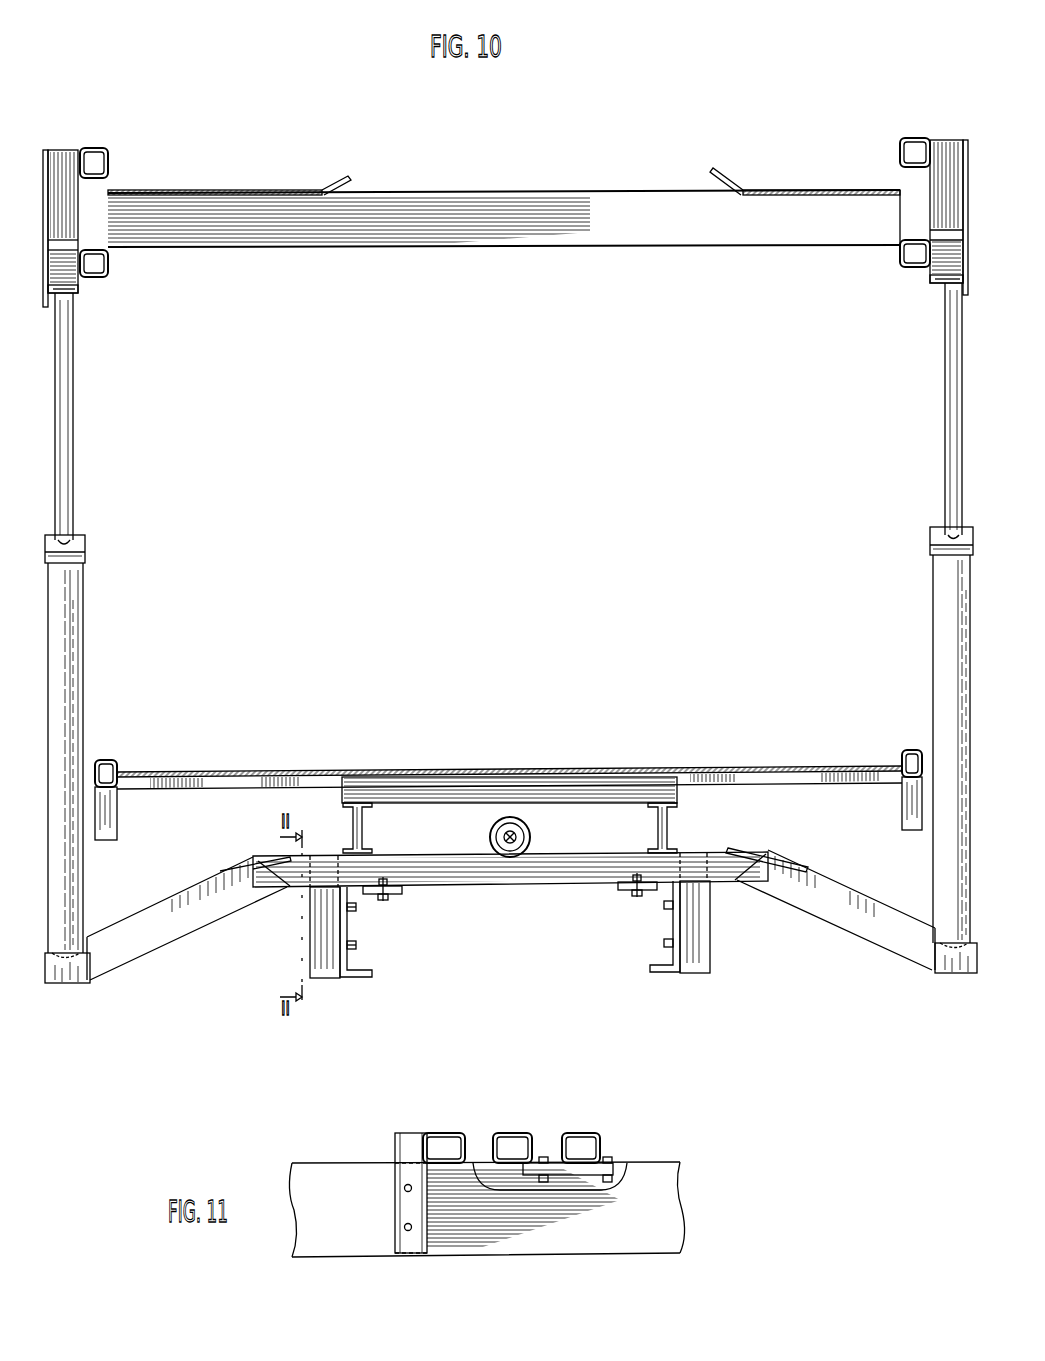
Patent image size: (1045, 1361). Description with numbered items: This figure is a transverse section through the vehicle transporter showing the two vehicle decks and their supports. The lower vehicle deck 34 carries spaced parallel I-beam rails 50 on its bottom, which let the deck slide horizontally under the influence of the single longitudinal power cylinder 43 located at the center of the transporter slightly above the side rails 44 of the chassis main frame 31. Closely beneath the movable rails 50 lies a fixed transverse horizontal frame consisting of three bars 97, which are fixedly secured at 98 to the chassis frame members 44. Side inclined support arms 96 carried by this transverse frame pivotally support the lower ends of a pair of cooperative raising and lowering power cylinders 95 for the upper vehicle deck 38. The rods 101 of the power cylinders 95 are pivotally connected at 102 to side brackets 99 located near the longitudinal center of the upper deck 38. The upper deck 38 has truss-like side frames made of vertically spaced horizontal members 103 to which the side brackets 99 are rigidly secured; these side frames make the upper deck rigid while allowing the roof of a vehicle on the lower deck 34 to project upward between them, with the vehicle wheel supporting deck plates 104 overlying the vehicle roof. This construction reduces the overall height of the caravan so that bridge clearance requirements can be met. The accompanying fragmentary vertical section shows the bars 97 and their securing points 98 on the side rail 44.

In FIG. 10, the main frame 31 is at (690, 925).
In FIG. 10, the lower vehicle deck 34 is at (305, 772).
In FIG. 10, the upper vehicle deck 38 is at (572, 192).
In FIG. 10, the longitudinal power cylinder 43 is at (530, 836).
In FIG. 10, the side rails 44 is at (355, 968).
In FIG. 11, the side rails 44 is at (623, 1248).
In FIG. 10, the I-beam rails 50 is at (367, 826).
In FIG. 10, the raising and lowering power cylinders 95 is at (83, 700).
In FIG. 10, the side inclined support arms 96 is at (165, 935).
In FIG. 10, the bars 97 is at (572, 884).
In FIG. 11, the bars 97 is at (560, 1135).
In FIG. 10, the securing points 98 is at (358, 943).
In FIG. 11, the securing points 98 is at (404, 1228).
In FIG. 10, the side brackets 99 is at (44, 165).
In FIG. 10, the rods 101 is at (73, 415).
In FIG. 10, the pivotal connection 102 is at (72, 287).
In FIG. 10, the horizontal members 103 is at (92, 150).
In FIG. 10, the vehicle wheel supporting deck plates 104 is at (232, 190).